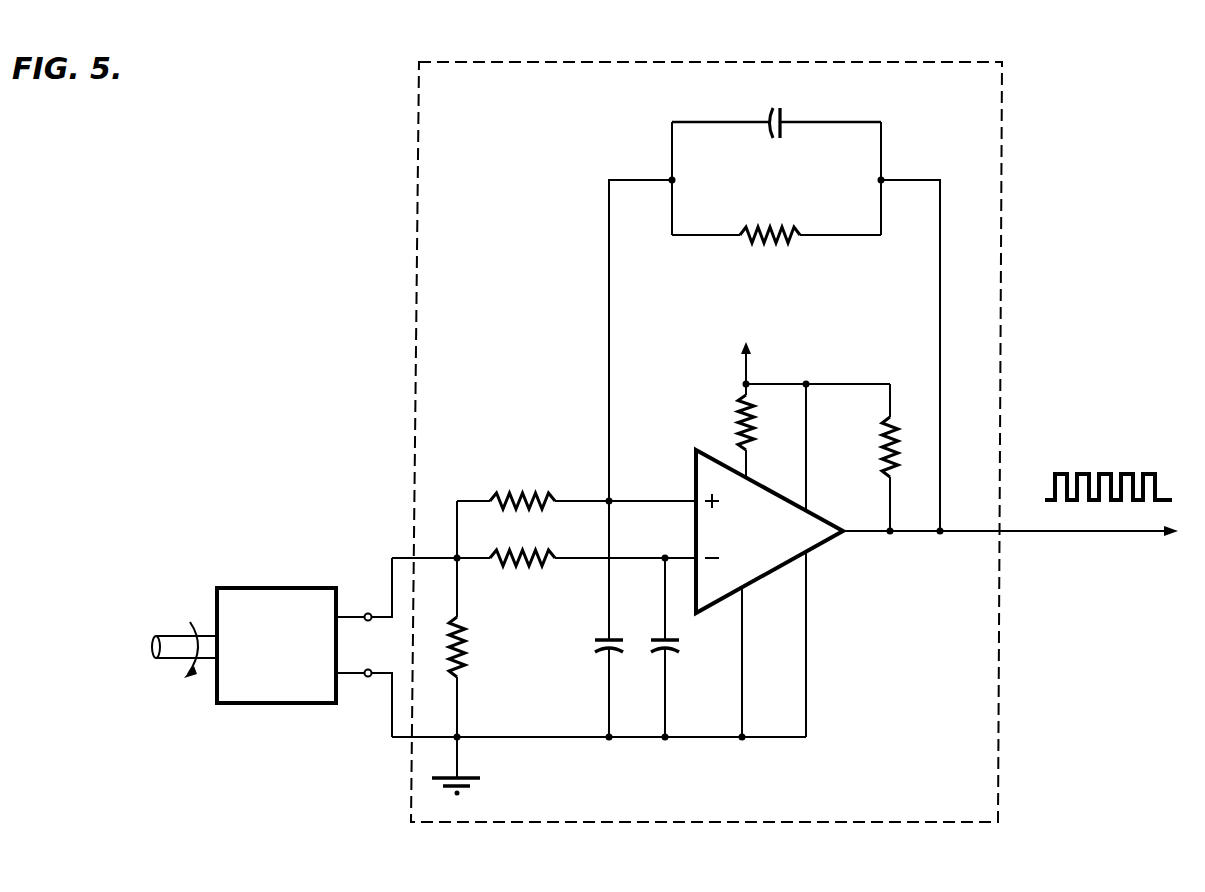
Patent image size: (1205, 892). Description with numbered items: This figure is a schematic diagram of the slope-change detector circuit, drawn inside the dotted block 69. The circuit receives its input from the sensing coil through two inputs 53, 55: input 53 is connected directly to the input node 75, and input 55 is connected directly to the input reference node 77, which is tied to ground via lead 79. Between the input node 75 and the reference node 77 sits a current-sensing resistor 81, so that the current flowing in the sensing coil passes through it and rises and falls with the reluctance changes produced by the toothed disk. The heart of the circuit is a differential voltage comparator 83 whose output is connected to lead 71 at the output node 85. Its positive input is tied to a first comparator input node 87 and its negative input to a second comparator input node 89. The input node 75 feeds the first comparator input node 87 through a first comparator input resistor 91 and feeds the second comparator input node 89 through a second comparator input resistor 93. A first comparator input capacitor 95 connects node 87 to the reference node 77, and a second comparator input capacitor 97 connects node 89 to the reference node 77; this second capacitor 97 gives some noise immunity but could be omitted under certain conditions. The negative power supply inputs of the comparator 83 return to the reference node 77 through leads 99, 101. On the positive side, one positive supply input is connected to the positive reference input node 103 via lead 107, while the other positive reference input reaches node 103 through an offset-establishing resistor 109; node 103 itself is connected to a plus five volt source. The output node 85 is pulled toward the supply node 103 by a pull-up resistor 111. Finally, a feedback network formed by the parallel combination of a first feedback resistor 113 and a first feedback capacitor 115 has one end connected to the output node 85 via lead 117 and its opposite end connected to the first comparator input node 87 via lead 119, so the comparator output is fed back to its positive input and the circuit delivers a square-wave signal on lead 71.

The input 53 is at (368, 613).
The input 55 is at (368, 677).
The slope-change detector circuit 69 is at (1003, 102).
The lead 71 is at (1045, 532).
The input node 75 is at (457, 557).
The input reference node 77 is at (458, 736).
The lead 79 is at (458, 760).
The current-sensing resistor 81 is at (464, 656).
The differential voltage comparator 83 is at (820, 546).
The output node 85 is at (940, 534).
The first comparator input node 87 is at (609, 500).
The second comparator input node 89 is at (665, 556).
The first comparator input resistor 91 is at (505, 492).
The second comparator input resistor 93 is at (540, 551).
The first comparator input capacitor 95 is at (594, 646).
The second comparator input capacitor 97 is at (650, 646).
The lead 99 is at (742, 655).
The lead 101 is at (806, 655).
The positive reference input node 103 is at (746, 384).
The lead 107 is at (806, 446).
The offset-establishing resistor 109 is at (746, 430).
The pull-up resistor 111 is at (883, 466).
The first feedback resistor 113 is at (762, 232).
The first feedback capacitor 115 is at (771, 110).
The lead 117 is at (941, 214).
The lead 119 is at (609, 212).